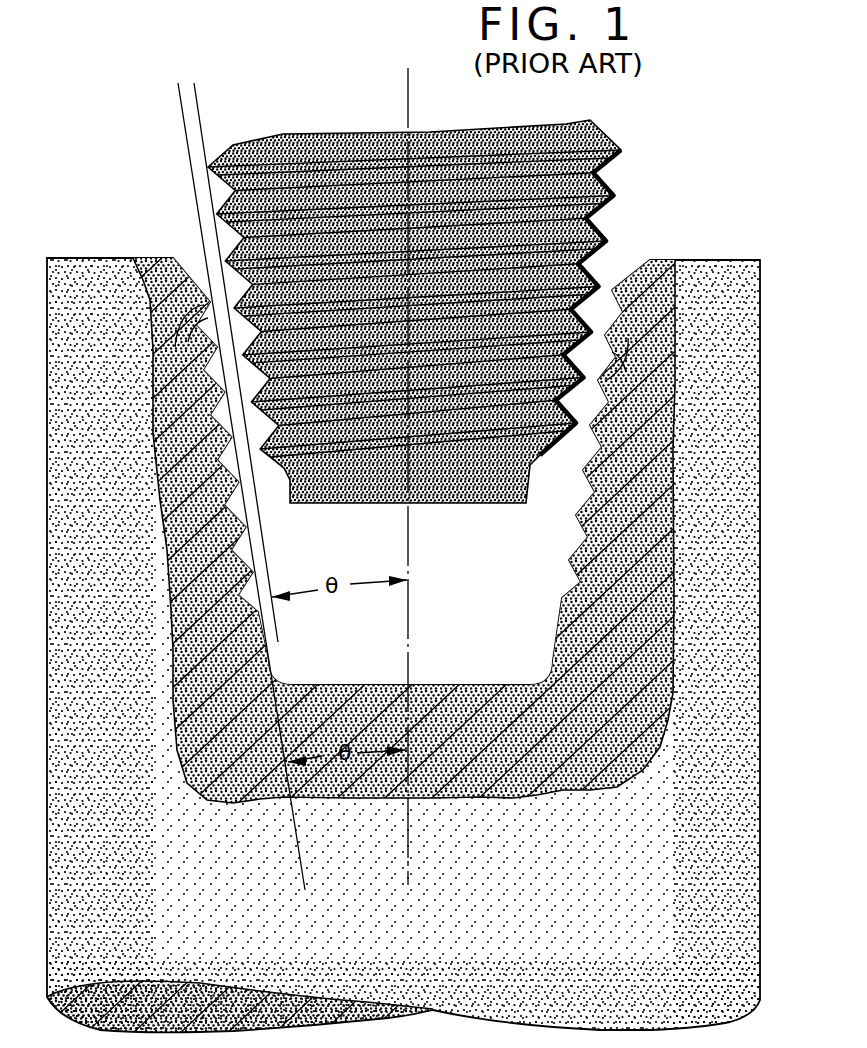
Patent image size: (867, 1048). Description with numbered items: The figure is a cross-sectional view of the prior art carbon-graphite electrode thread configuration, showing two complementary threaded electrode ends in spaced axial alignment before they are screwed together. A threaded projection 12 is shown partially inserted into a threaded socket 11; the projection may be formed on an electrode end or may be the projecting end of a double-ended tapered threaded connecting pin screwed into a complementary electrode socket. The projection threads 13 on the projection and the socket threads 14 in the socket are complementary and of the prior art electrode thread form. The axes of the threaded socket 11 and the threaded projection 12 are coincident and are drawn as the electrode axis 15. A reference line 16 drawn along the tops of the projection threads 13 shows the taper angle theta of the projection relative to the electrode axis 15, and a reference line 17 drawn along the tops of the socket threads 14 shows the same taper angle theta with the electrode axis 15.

The threaded socket 11 is at (113, 257).
The threaded projection 12 is at (279, 135).
The projection threads 13 is at (222, 266).
The socket threads 14 is at (203, 352).
The electrode axis 15 is at (408, 850).
The reference line 16 is at (267, 547).
The reference line 17 is at (302, 843).